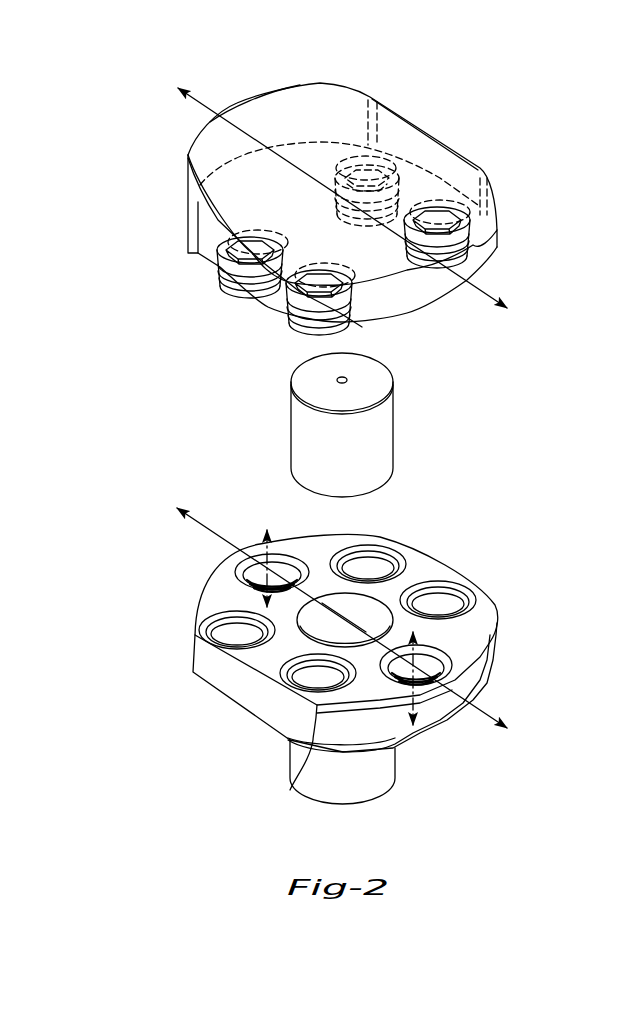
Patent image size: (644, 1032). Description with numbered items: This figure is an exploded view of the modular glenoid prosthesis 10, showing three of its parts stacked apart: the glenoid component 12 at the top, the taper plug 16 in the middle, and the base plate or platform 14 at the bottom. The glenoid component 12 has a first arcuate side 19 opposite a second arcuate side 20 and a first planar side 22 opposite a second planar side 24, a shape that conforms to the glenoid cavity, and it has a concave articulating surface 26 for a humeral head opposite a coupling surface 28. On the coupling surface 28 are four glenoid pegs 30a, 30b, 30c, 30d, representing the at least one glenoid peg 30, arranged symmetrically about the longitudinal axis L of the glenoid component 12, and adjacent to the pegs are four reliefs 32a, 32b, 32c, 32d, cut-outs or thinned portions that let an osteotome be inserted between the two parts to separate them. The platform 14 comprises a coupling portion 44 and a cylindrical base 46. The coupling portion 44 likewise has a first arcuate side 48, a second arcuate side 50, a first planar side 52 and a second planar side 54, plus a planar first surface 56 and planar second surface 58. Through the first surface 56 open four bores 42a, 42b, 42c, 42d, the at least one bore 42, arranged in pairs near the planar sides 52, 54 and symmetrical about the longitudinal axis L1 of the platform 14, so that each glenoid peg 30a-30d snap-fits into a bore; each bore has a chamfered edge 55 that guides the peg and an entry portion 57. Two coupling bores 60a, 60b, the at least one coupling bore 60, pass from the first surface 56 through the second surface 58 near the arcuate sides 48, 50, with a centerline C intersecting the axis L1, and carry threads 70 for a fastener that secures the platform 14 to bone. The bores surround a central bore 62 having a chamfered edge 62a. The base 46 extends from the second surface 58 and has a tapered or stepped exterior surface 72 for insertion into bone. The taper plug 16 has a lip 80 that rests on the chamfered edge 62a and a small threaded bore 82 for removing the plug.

The modular glenoid prosthesis 10 is at (558, 107).
The glenoid component 12 is at (425, 128).
The platform 14 is at (468, 773).
The taper plug 16 is at (293, 430).
The first arcuate side 19 is at (233, 104).
The second arcuate side 20 is at (483, 265).
The first planar side 22 is at (202, 222).
The second planar side 24 is at (452, 128).
The articulating surface 26 is at (300, 83).
The coupling surface 28 is at (459, 305).
The glenoid peg 30 is at (257, 323).
The glenoid peg 30a is at (282, 312).
The glenoid peg 30b is at (221, 241).
The glenoid peg 30c is at (432, 202).
The glenoid peg 30d is at (345, 160).
The relief 32a is at (320, 264).
The relief 32b is at (258, 232).
The relief 32c is at (447, 195).
The relief 32d is at (360, 156).
The bore 42 is at (240, 724).
The bore 42a is at (279, 683).
The bore 42b is at (215, 637).
The bore 42c is at (479, 595).
The bore 42d is at (390, 537).
The coupling portion 44 is at (492, 688).
The base 46 is at (369, 805).
The first arcuate side 48 is at (197, 593).
The second arcuate side 50 is at (398, 745).
The first planar side 52 is at (218, 677).
The second planar side 54 is at (400, 578).
The chamfered edge 55 is at (370, 548).
The first surface 56 is at (222, 592).
The entry portion 57 is at (350, 560).
The second surface 58 is at (296, 790).
The coupling bore 60 is at (460, 743).
The coupling bore 60a is at (455, 660).
The coupling bore 60b is at (294, 555).
The central bore 62 is at (397, 588).
The chamfered edge 62a is at (325, 592).
The threads 70 is at (280, 548).
The exterior surface 72 is at (367, 777).
The lip 80 is at (400, 402).
The threaded bore 82 is at (349, 378).
The longitudinal axis L is at (200, 103).
The longitudinal axis L1 is at (203, 512).
The centerline C is at (258, 548).